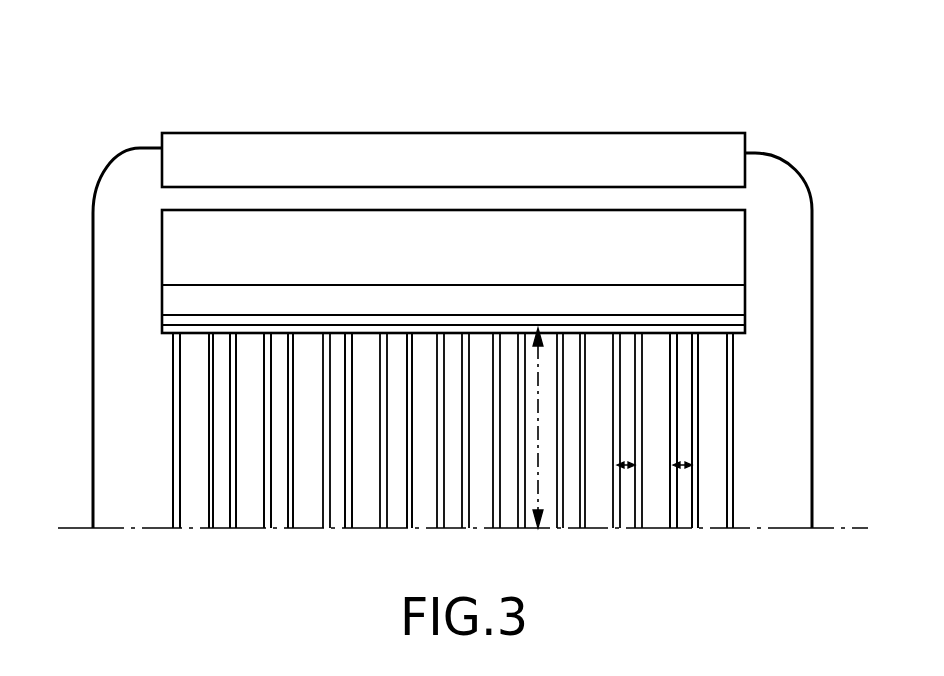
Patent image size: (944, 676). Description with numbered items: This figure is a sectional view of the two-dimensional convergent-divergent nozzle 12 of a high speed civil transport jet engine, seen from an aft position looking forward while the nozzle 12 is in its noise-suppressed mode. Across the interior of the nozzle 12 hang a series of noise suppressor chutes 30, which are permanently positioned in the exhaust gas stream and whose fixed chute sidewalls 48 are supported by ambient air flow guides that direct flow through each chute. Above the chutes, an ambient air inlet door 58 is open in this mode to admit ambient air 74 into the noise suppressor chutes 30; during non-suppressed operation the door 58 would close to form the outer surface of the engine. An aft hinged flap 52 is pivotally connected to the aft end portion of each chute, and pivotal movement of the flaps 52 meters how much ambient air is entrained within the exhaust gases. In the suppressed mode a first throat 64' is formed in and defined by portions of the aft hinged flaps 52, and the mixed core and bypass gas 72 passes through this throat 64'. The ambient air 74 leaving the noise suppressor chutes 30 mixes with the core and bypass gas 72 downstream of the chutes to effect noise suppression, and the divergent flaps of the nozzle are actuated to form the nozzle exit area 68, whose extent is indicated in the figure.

The two-dimensional convergent-divergent nozzle 12 is at (122, 90).
The ambient air inlet door 58 is at (440, 132).
The noise suppressor chute 30 is at (208, 452).
The aft hinged flap 52 is at (733, 381).
The nozzle throat 64' is at (752, 485).
The mixed core and bypass gas 72 is at (168, 514).
The ambient air 74 is at (305, 514).
The nozzle exit area 68 is at (570, 500).
The fixed chute sidewall 48 is at (695, 505).